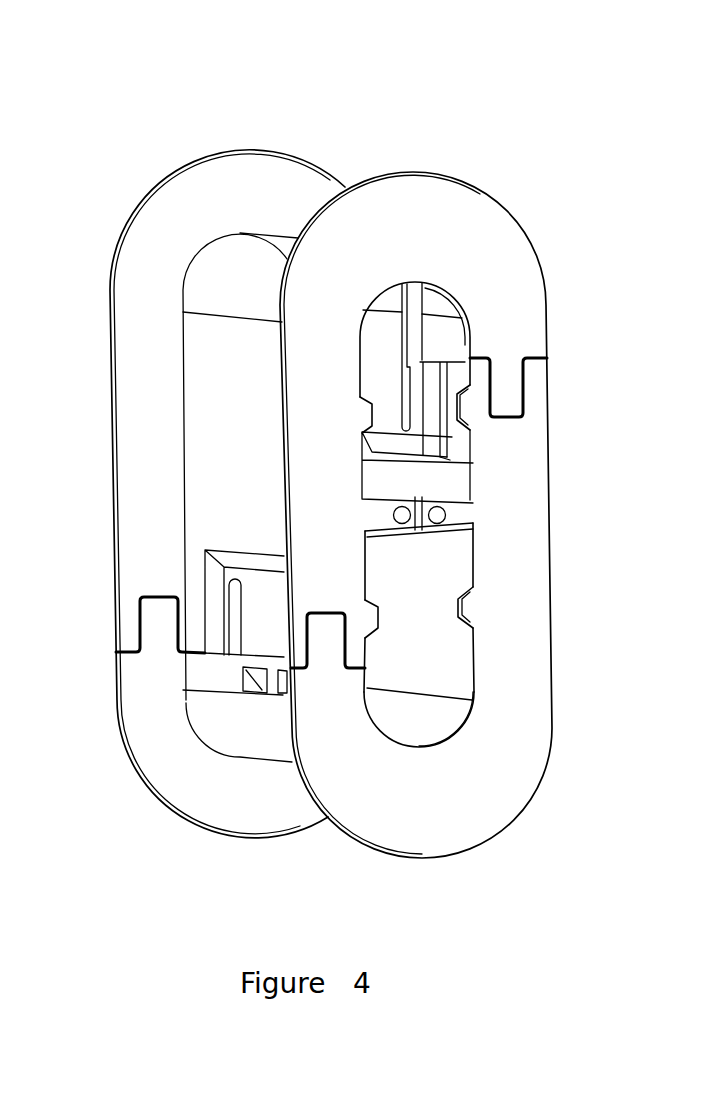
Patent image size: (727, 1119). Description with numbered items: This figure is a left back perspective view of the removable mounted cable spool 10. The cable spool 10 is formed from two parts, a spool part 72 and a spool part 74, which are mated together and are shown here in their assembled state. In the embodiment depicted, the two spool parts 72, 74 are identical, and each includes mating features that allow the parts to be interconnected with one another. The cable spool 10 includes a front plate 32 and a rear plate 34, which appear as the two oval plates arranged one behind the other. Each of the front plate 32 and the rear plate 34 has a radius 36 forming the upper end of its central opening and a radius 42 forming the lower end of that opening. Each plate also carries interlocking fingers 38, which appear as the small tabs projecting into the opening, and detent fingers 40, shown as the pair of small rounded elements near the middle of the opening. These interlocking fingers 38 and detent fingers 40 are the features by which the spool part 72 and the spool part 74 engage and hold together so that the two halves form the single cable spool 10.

The cable spool 10 is at (366, 55).
The front plate 32 is at (213, 154).
The rear plate 34 is at (476, 184).
The radius 36 is at (398, 286).
The interlocking fingers 38 is at (363, 412).
The detent fingers 40 is at (393, 513).
The radius 42 is at (405, 750).
The spool part 72 is at (103, 248).
The spool part 74 is at (537, 802).